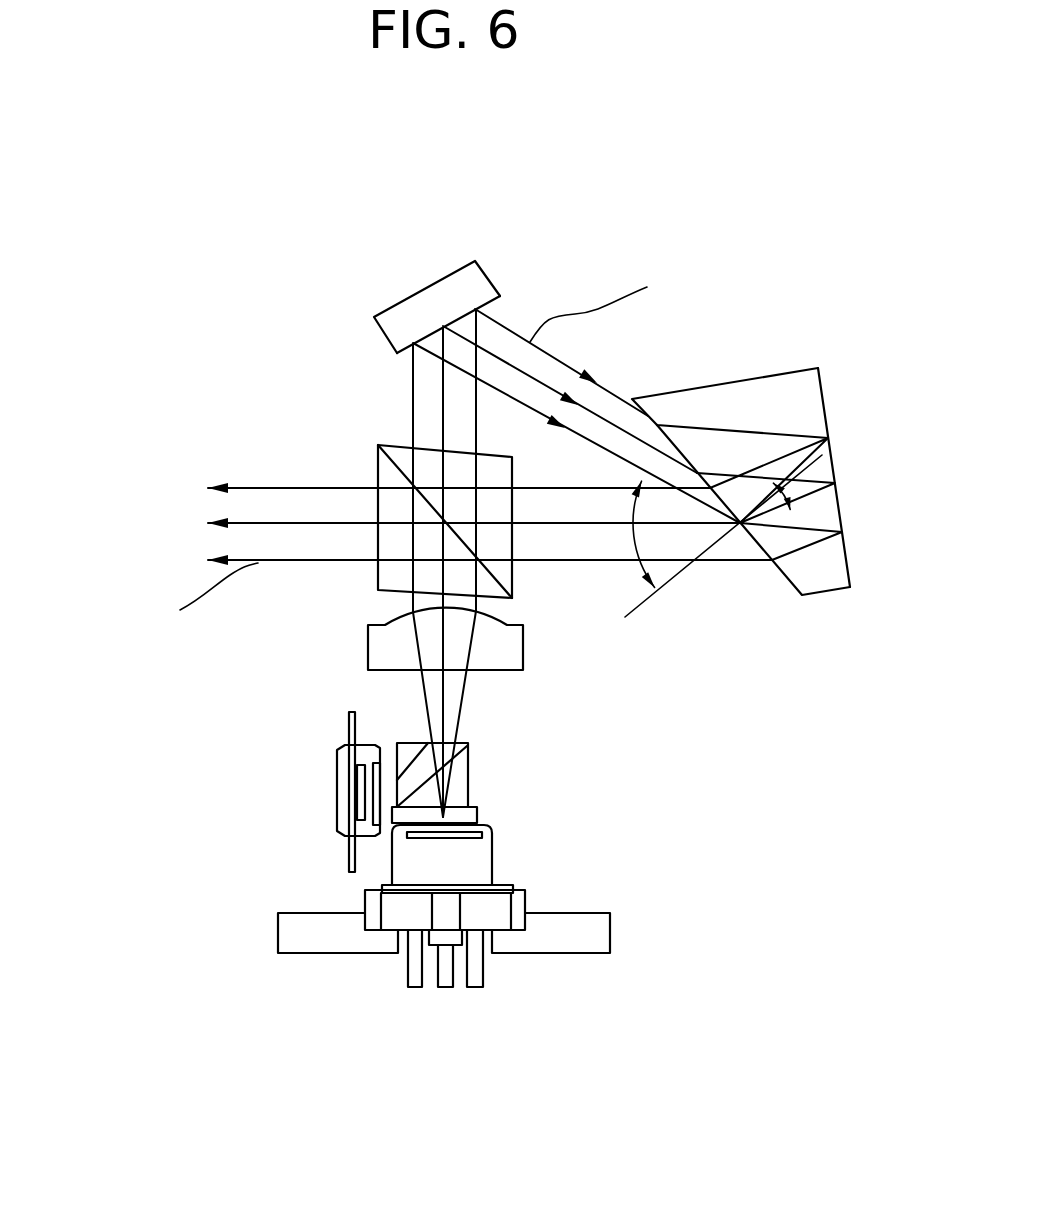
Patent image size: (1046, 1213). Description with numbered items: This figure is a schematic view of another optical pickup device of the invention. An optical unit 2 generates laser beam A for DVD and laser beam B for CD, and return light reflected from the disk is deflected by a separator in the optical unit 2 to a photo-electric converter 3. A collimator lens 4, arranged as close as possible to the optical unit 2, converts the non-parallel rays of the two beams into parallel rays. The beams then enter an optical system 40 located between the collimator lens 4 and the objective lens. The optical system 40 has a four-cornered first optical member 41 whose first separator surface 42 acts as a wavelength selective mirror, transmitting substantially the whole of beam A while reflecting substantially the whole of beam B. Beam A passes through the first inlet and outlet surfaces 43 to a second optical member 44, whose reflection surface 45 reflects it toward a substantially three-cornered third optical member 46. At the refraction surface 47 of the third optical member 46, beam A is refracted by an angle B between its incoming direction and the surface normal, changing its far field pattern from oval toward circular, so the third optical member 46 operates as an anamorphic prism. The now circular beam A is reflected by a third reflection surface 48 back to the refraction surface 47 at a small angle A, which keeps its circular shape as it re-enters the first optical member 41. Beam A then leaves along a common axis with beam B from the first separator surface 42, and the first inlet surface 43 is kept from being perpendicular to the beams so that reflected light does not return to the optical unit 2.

The optical unit 2 is at (492, 865).
The photo-electric converter 3 is at (337, 808).
The collimator lens 4 is at (368, 652).
The optical system 40 is at (590, 228).
The first optical member 41 is at (376, 572).
The first separator surface 42 is at (378, 470).
The first inlet and outlet surfaces 43 is at (402, 444).
The second optical member 44 is at (386, 340).
The reflection surface 45 is at (498, 298).
The third optical member 46 is at (752, 377).
The refraction surface 47 is at (777, 572).
The third reflection surface 48 is at (824, 416).